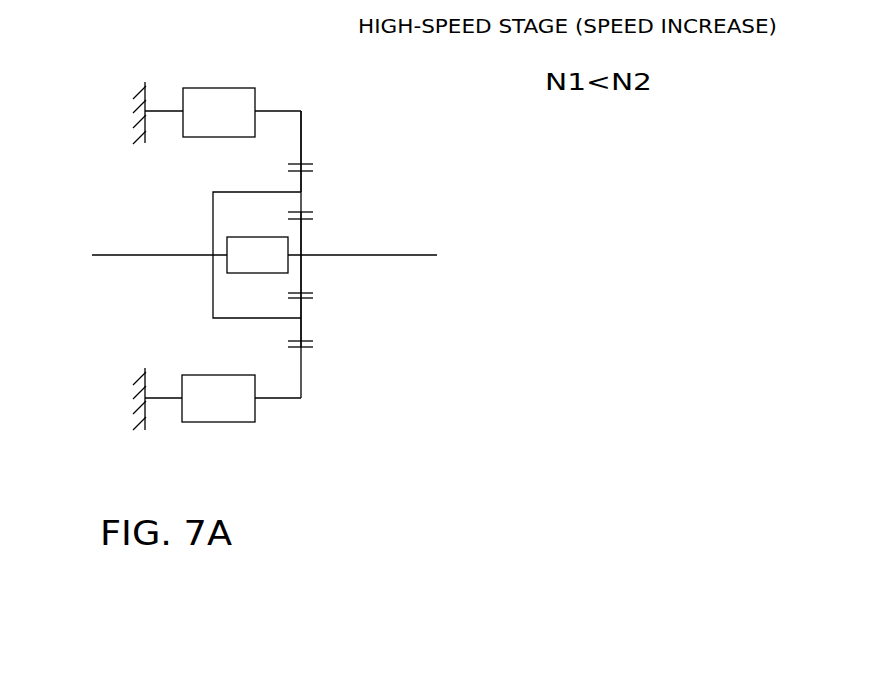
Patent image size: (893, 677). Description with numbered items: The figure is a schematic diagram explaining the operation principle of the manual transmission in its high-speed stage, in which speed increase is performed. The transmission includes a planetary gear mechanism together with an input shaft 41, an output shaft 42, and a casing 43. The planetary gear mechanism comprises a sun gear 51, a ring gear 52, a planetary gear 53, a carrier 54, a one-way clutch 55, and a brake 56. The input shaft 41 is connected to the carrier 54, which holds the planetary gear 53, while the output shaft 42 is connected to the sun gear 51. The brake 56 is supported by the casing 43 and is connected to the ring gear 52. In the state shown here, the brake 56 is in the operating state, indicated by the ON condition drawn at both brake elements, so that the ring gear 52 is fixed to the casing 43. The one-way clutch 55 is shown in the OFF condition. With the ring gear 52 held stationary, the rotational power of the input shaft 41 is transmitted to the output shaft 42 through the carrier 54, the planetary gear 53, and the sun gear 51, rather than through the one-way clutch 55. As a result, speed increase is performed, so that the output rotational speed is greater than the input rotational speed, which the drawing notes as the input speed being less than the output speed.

The input shaft 41 is at (123, 253).
The output shaft 42 is at (408, 253).
The casing 43 is at (152, 84).
The sun gear 51 is at (303, 232).
The ring gear 52 is at (303, 113).
The planetary gear 53 is at (303, 180).
The carrier 54 is at (213, 200).
The one-way clutch 55 is at (224, 248).
The brake 56 is at (217, 87).